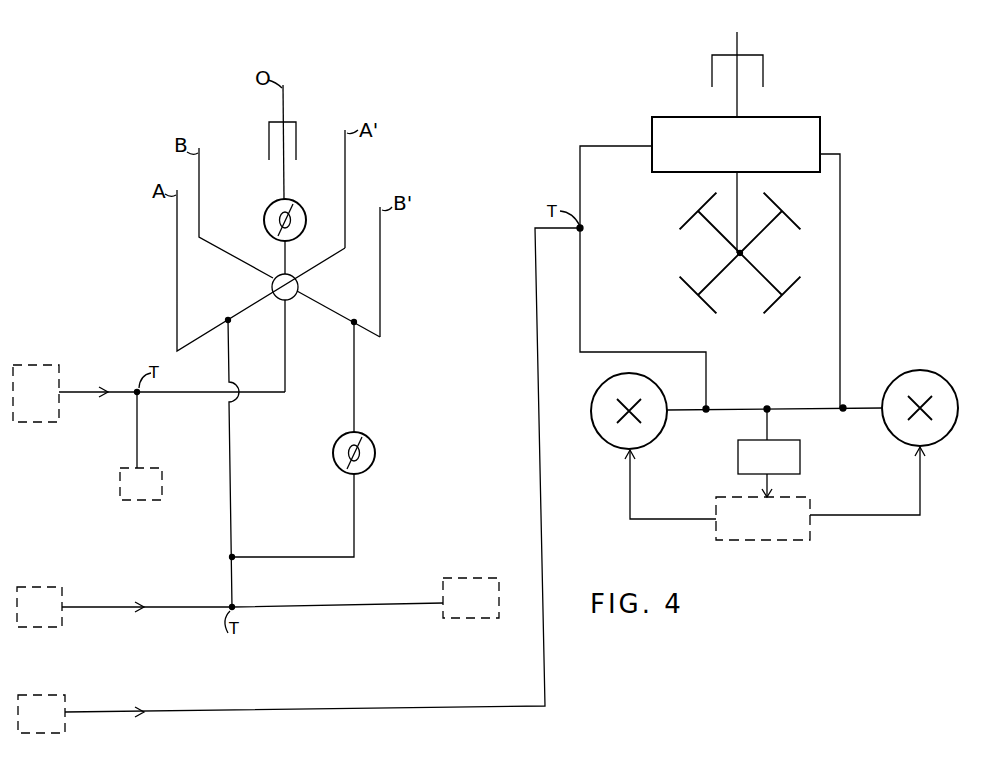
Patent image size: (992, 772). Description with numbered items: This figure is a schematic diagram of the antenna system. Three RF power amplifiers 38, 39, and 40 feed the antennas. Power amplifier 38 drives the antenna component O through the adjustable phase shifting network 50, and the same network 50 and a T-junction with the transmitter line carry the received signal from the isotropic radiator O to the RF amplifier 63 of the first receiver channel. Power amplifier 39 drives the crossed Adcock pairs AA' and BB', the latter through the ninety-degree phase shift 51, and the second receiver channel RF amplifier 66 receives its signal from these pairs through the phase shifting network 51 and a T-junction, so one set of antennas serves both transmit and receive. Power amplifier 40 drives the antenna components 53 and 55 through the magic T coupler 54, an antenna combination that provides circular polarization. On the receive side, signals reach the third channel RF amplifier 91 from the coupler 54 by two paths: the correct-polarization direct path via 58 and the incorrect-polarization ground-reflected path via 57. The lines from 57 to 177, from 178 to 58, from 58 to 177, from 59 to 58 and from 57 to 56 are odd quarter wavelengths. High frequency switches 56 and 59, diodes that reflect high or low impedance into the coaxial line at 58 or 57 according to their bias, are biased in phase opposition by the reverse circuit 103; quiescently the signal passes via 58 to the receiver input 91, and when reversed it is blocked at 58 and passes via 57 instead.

The RF power amplifier 38 is at (25, 363).
The RF power amplifier 39 is at (47, 585).
The RF power amplifier 40 is at (47, 693).
The RF amplifier 63 is at (155, 466).
The RF amplifier 66 is at (465, 578).
The adjustable phase shifting network 50 is at (264, 218).
The 90° phase shift network 51 is at (375, 457).
The antenna component 53 is at (736, 33).
The magic T coupler 54 is at (652, 122).
The antenna component 55 is at (741, 257).
The high frequency switch 56 is at (928, 375).
The coaxial line point 57 is at (849, 404).
The coaxial line point 58 is at (706, 414).
The high frequency switch 59 is at (591, 403).
The superheterodyne RF amplifier 91 is at (800, 466).
The reverse circuit 103 is at (745, 541).
The line junction point 177 is at (770, 404).
The line junction point 178 is at (588, 227).